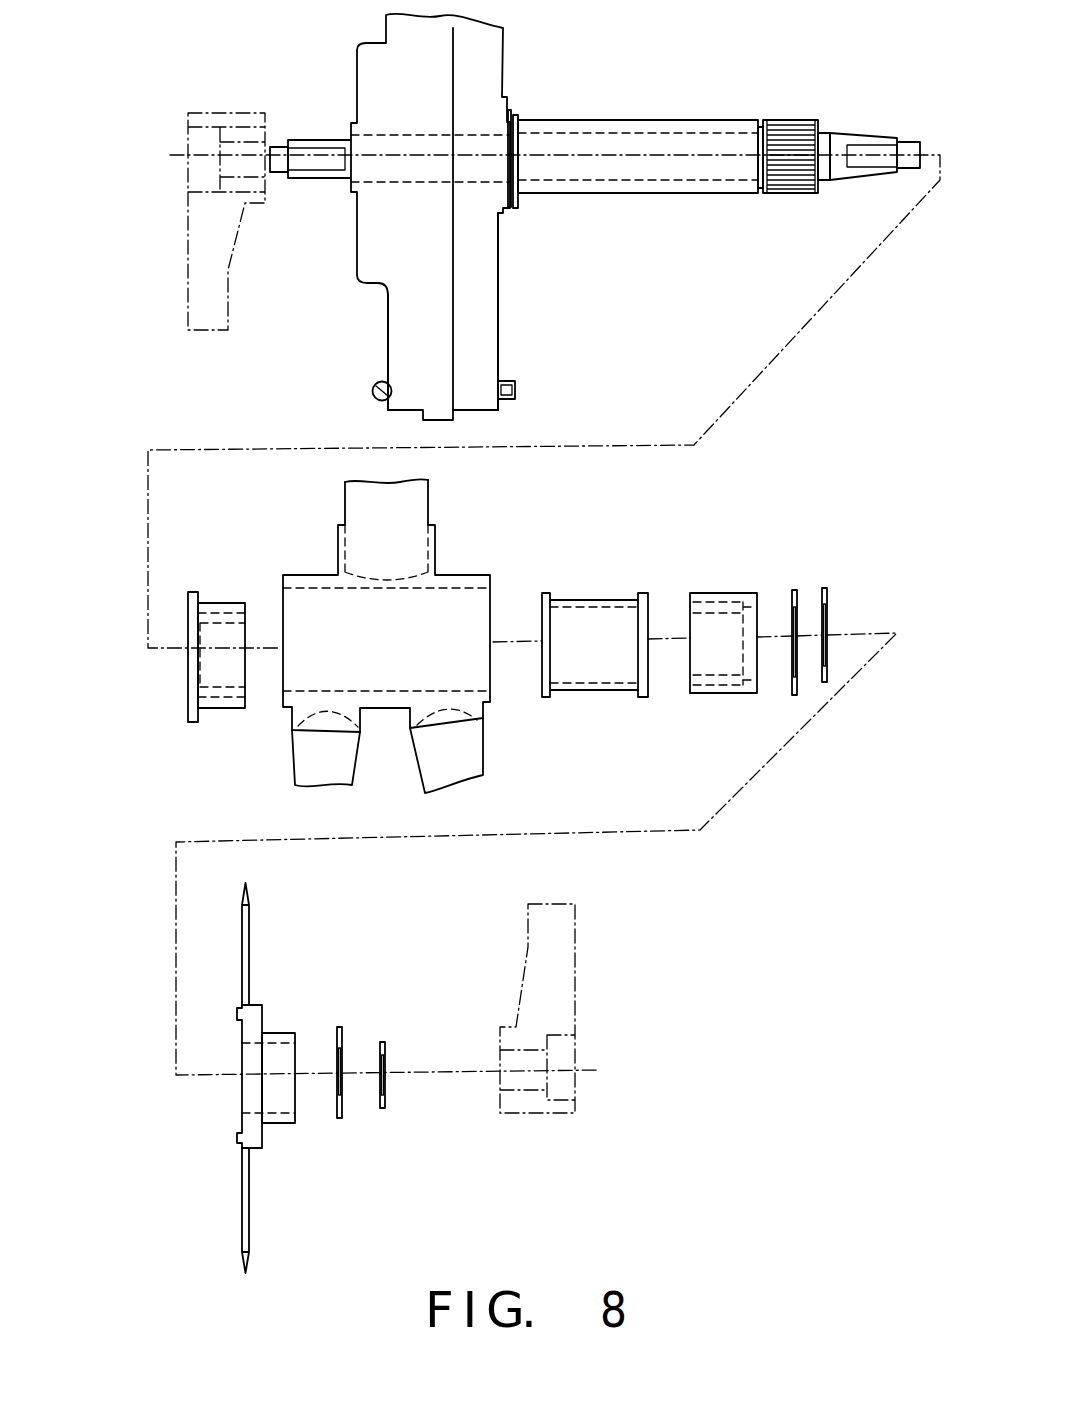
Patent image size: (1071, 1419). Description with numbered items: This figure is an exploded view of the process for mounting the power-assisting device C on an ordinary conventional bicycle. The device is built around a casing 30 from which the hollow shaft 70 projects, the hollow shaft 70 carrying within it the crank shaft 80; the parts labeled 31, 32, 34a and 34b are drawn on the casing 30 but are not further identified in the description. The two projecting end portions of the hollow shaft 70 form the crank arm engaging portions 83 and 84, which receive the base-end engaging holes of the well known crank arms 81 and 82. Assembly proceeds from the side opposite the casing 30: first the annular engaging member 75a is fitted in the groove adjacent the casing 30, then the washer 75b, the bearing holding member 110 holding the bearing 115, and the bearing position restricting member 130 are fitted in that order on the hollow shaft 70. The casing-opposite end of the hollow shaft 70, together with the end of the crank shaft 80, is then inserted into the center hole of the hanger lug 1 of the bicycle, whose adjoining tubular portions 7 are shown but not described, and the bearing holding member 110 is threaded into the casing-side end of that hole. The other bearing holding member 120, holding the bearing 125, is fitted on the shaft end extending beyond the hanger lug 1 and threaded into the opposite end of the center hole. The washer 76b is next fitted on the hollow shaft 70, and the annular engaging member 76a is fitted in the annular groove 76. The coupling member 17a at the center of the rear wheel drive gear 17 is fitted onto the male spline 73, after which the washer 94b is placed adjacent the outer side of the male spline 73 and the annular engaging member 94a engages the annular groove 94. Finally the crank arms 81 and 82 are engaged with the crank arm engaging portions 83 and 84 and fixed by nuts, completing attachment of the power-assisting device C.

The casing 30 is at (355, 72).
The housing rear wall 31 is at (498, 297).
The housing lower portion 32 is at (388, 308).
The mounting boss 34a is at (375, 388).
The mounting screw 34b is at (503, 377).
The power-assisting device C is at (350, 242).
The crank arm engaging portion 83 is at (310, 180).
The crank arm 81 is at (228, 270).
The annular engaging member 75a is at (510, 110).
The washer 75b is at (518, 117).
The hollow shaft 70 is at (638, 120).
The crank shaft 80 is at (712, 133).
The annular groove 76 is at (762, 127).
The male spline 73 is at (797, 120).
The annular groove 94 is at (828, 133).
The crank arm engaging portion 84 is at (868, 178).
The bearing holding member 110 is at (213, 602).
The bearing 115 is at (228, 690).
The hanger lug 1 is at (460, 567).
The tube 7 is at (430, 497).
The bearing position restricting member 130 is at (592, 598).
The bearing holding member 120 is at (725, 590).
The bearing 125 is at (733, 680).
The washer 76b is at (797, 590).
The annular engaging member 76a is at (827, 590).
The rear wheel drive gear 17 is at (253, 938).
The coupling member 17a is at (277, 1030).
The washer 94b is at (342, 1025).
The annular engaging member 94a is at (386, 1040).
The crank arm 82 is at (575, 1017).